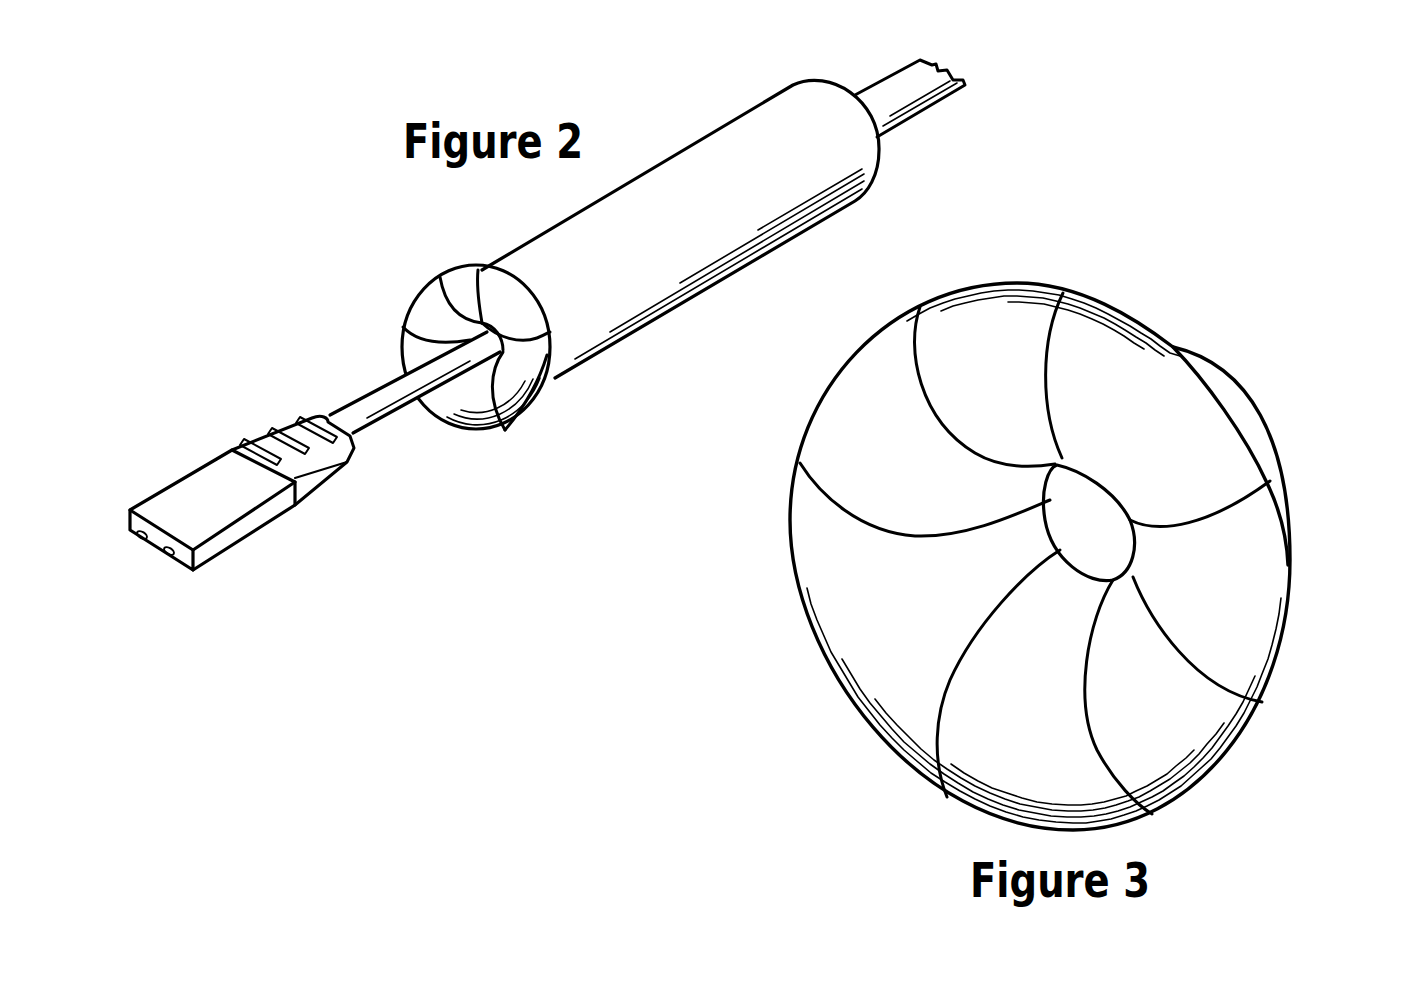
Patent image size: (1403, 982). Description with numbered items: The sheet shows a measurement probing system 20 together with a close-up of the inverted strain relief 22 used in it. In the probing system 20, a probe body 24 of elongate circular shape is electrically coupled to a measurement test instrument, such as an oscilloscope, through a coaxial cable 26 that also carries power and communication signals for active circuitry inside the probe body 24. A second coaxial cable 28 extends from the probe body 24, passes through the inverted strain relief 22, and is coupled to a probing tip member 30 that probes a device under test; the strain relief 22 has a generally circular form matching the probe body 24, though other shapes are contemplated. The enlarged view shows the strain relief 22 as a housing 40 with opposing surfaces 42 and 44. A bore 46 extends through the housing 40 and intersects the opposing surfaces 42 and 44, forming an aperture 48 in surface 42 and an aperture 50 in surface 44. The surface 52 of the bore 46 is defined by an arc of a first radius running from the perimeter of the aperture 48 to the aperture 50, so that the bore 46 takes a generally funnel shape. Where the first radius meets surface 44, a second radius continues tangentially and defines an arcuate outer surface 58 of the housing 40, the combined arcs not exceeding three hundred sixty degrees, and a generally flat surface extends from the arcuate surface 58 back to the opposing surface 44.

In FIG. 2, the measurement probing system 20 is at (403, 258).
In FIG. 2, the inverted strain relief 22 is at (537, 400).
In FIG. 3, the inverted strain relief 22 is at (1168, 302).
In FIG. 2, the probe body 24 is at (713, 286).
In FIG. 2, the coaxial cable 26 is at (917, 116).
In FIG. 2, the coaxial cable 28 is at (386, 418).
In FIG. 2, the probing tip member 30 is at (253, 535).
In FIG. 3, the housing 40 is at (857, 723).
In FIG. 3, the surface 42 is at (1276, 424).
In FIG. 3, the surface 44 is at (847, 418).
In FIG. 3, the bore 46 is at (838, 634).
In FIG. 3, the aperture 48 is at (1088, 580).
In FIG. 3, the aperture 50 is at (972, 809).
In FIG. 3, the surface of the bore 52 is at (922, 467).
In FIG. 3, the arcuate outer surface 58 is at (1290, 607).